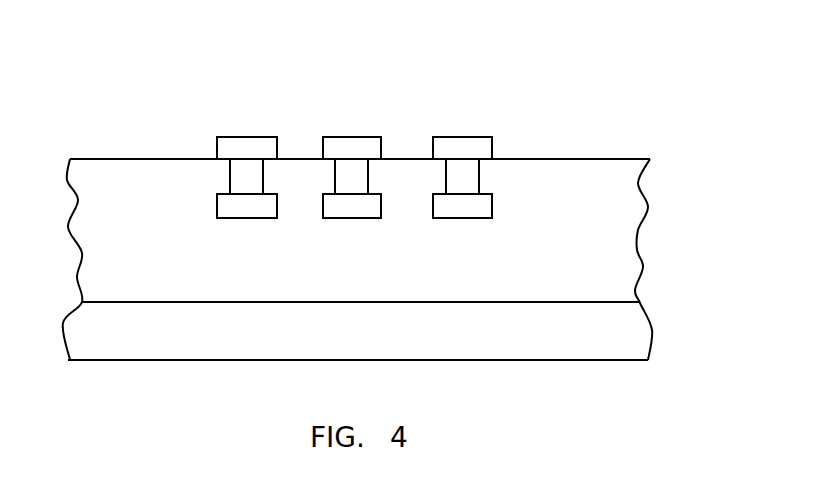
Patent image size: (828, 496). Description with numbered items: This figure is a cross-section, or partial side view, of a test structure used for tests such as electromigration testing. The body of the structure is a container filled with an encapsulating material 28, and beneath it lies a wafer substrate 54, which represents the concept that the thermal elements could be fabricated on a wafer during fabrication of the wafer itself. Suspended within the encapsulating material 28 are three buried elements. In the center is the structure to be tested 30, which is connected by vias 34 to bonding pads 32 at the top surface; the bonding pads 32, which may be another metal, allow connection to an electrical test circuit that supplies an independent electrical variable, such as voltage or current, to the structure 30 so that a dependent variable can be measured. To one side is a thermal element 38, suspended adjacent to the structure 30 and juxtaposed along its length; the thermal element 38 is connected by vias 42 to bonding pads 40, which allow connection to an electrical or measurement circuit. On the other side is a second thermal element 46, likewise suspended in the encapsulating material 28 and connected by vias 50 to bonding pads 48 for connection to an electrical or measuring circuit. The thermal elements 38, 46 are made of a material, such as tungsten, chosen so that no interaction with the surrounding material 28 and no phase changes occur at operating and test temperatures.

The encapsulating material 28 is at (358, 259).
The wafer substrate 54 is at (623, 342).
The bonding pads 40 is at (247, 147).
The vias 42 is at (247, 178).
The thermal element 38 is at (242, 203).
The bonding pads 32 is at (340, 147).
The vias 34 is at (355, 180).
The structure to be tested 30 is at (350, 205).
The bonding pads 48 is at (460, 147).
The vias 50 is at (467, 178).
The second thermal element 46 is at (483, 207).